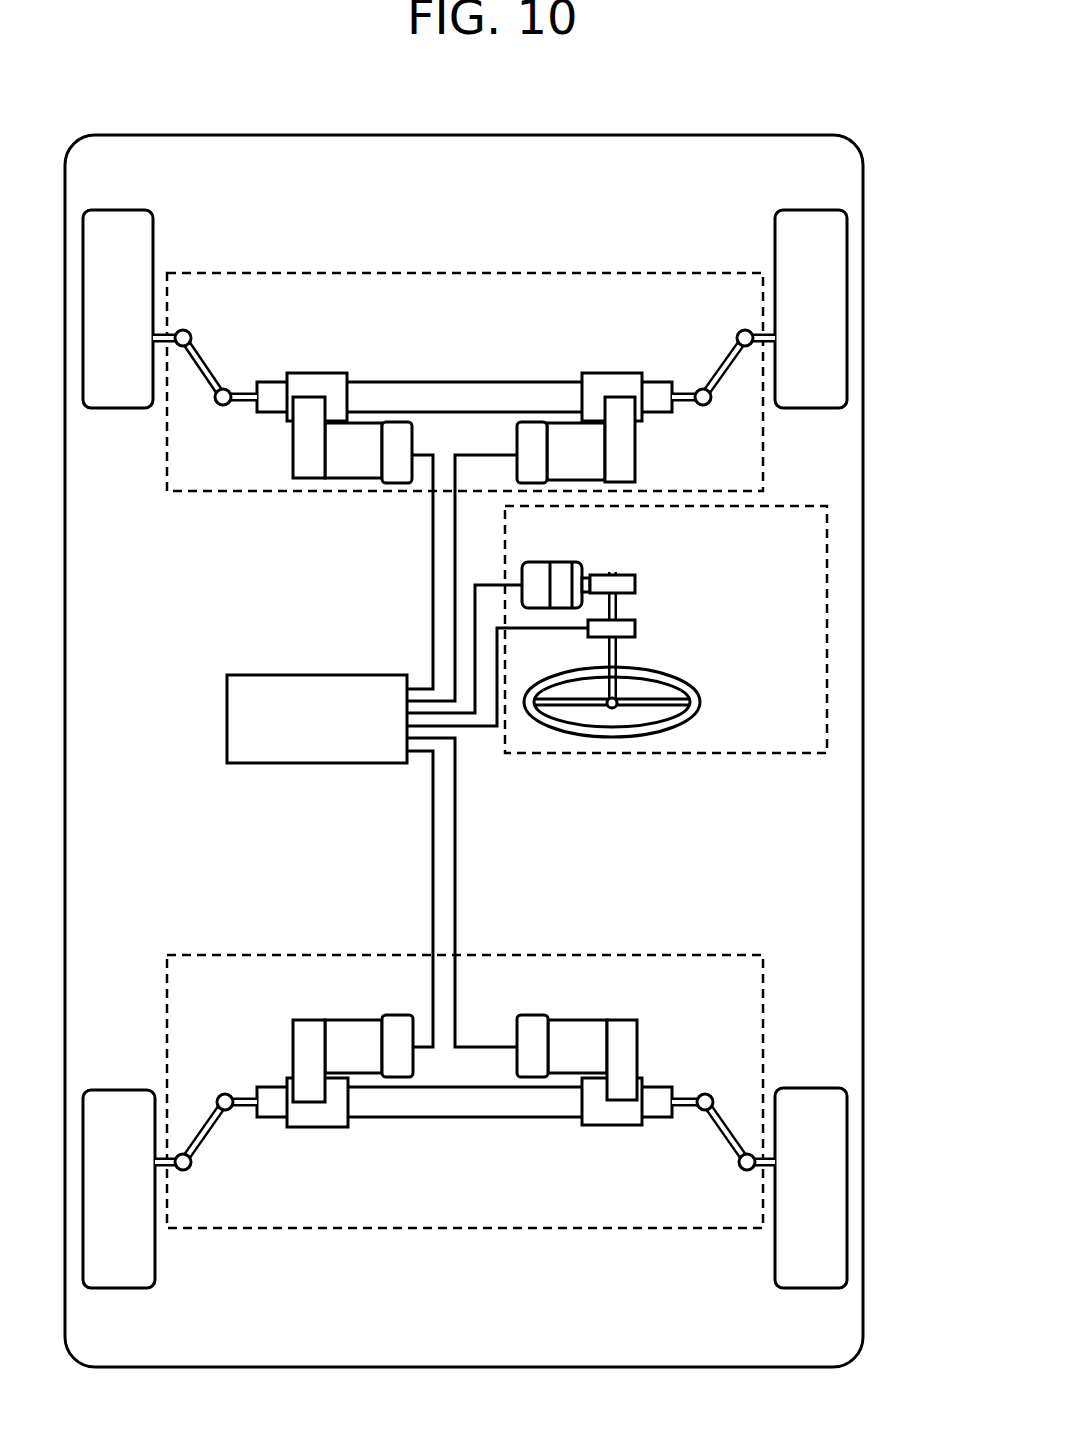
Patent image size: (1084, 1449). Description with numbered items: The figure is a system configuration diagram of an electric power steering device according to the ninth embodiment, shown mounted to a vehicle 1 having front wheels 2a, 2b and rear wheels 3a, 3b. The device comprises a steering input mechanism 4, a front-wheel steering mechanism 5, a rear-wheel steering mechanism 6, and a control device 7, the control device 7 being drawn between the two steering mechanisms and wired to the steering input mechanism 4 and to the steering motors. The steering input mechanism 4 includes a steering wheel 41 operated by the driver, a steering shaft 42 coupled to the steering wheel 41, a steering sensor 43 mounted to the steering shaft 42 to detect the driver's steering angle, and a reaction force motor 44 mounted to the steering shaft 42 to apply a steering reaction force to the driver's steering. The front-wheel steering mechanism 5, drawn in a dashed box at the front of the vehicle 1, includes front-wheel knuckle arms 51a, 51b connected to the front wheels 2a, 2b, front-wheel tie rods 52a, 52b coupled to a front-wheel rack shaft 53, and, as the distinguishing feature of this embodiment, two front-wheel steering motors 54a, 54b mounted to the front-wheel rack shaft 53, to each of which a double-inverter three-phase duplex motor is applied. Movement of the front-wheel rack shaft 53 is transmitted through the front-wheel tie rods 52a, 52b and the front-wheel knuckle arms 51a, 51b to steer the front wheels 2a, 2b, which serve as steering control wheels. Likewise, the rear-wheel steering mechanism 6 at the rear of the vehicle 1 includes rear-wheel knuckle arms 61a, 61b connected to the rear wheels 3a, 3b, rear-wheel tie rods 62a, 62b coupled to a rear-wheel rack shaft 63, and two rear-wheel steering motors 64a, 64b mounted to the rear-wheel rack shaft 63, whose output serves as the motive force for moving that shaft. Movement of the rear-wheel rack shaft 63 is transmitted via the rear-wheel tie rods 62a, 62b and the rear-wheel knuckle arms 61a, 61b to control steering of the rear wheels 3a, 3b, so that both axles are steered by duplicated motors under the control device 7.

The vehicle 1 is at (880, 470).
The front wheel 2a is at (155, 255).
The front wheel 2b is at (773, 250).
The rear wheel 3a is at (115, 1090).
The rear wheel 3b is at (815, 1088).
The steering input mechanism 4 is at (790, 753).
The front-wheel steering mechanism 5 is at (590, 272).
The rear-wheel steering mechanism 6 is at (365, 1230).
The control device 7 is at (327, 675).
The steering wheel 41 is at (697, 700).
The steering shaft 42 is at (615, 665).
The steering sensor 43 is at (628, 620).
The reaction force motor 44 is at (557, 562).
The front-wheel knuckle arm 51a is at (200, 363).
The front-wheel knuckle arm 51b is at (728, 360).
The front-wheel tie rod 52a is at (243, 390).
The front-wheel tie rod 52b is at (682, 392).
The front-wheel rack shaft 53 is at (478, 388).
The front-wheel steering motor 54a is at (405, 447).
The front-wheel steering motor 54b is at (628, 453).
The rear-wheel knuckle arm 61a is at (200, 1147).
The rear-wheel knuckle arm 61b is at (723, 1140).
The rear-wheel tie rod 62a is at (242, 1108).
The rear-wheel tie rod 62b is at (683, 1110).
The rear-wheel rack shaft 63 is at (493, 1118).
The rear-wheel steering motor 64a is at (345, 1022).
The rear-wheel steering motor 64b is at (575, 1022).